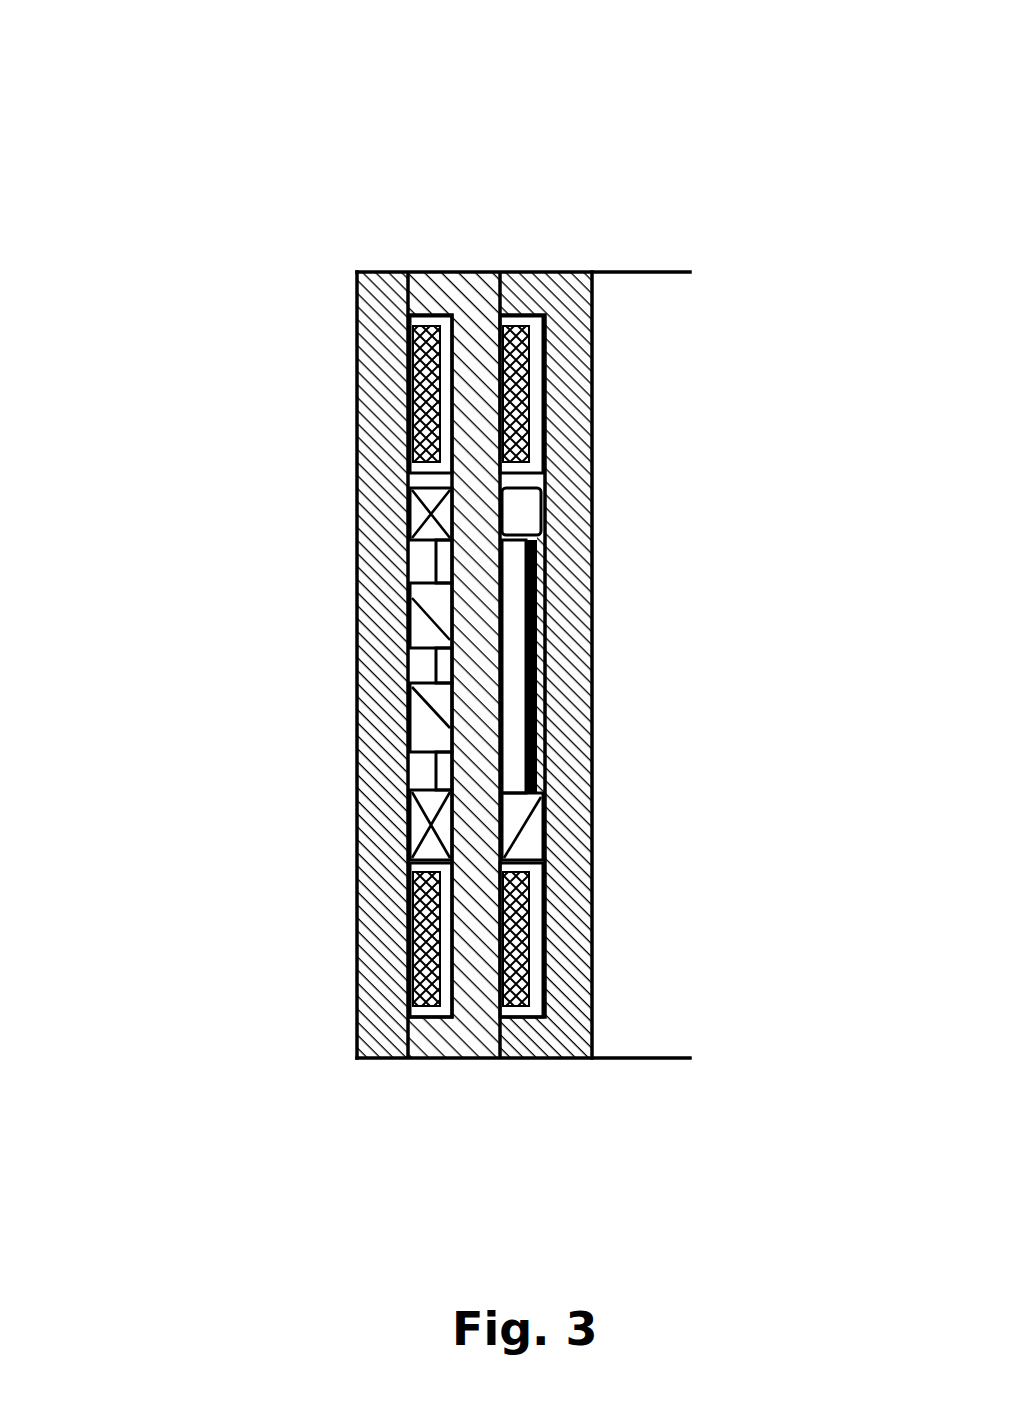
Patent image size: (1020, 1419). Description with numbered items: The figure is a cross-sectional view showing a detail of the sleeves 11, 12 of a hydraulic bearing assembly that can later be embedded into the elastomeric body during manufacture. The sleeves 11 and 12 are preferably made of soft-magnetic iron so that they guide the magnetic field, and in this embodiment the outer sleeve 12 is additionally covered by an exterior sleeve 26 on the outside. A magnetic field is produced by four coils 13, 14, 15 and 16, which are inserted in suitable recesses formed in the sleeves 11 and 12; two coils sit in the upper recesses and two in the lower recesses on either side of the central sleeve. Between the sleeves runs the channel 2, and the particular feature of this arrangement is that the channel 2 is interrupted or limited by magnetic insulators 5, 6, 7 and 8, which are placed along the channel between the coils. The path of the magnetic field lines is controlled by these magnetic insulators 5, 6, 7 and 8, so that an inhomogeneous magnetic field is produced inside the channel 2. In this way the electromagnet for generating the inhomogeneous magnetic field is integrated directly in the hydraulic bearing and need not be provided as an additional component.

The channel 2 is at (620, 666).
The magnetic insulator 5 is at (271, 508).
The magnetic insulator 6 is at (270, 819).
The magnetic insulator 7 is at (678, 495).
The magnetic insulator 8 is at (691, 791).
The sleeve 11 is at (546, 529).
The outer sleeve 12 is at (426, 529).
The coil 13 is at (273, 370).
The coil 14 is at (259, 940).
The coil 15 is at (679, 392).
The coil 16 is at (679, 940).
The exterior sleeve 26 is at (288, 574).